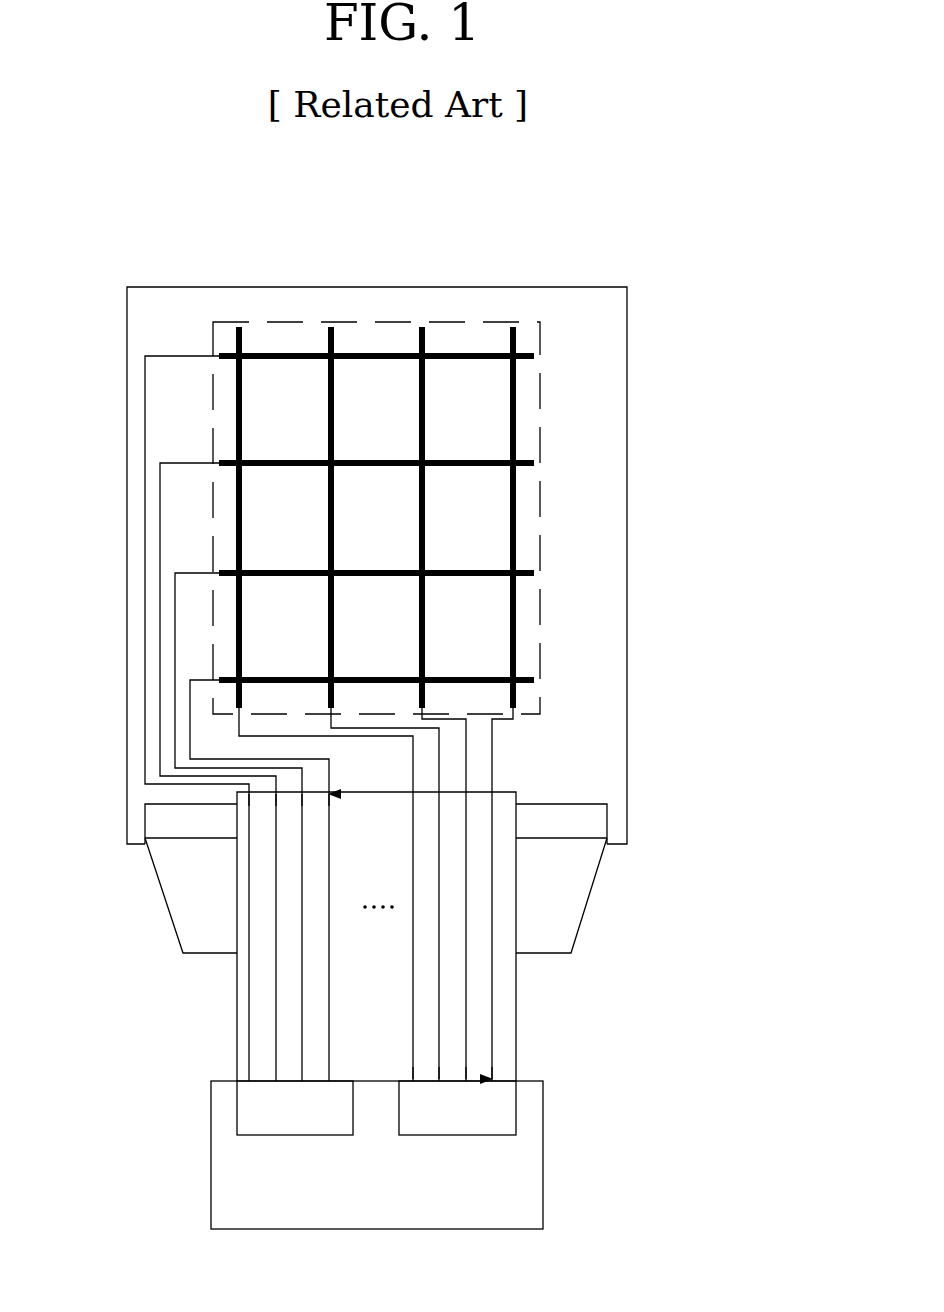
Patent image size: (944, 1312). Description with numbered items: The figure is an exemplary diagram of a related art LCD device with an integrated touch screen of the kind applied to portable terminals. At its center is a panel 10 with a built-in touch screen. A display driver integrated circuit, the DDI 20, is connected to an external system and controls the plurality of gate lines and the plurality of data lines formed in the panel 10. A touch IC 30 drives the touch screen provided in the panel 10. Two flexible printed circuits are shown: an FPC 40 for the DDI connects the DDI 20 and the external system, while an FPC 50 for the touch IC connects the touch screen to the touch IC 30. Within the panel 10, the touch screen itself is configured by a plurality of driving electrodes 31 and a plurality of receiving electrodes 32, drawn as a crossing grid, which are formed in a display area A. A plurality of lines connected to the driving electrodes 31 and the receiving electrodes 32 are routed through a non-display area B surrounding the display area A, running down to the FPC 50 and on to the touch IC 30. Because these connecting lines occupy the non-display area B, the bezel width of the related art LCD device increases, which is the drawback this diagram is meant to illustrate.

The panel 10 is at (627, 493).
The display driver integrated circuit (DDI) 20 is at (145, 820).
The touch IC 30 is at (543, 1158).
The driving electrodes 31 is at (272, 570).
The receiving electrodes 32 is at (515, 633).
The FPC for DDI 40 is at (160, 893).
The FPC for touch IC 50 is at (516, 1035).
The display area A is at (472, 397).
The non-display area B is at (603, 580).